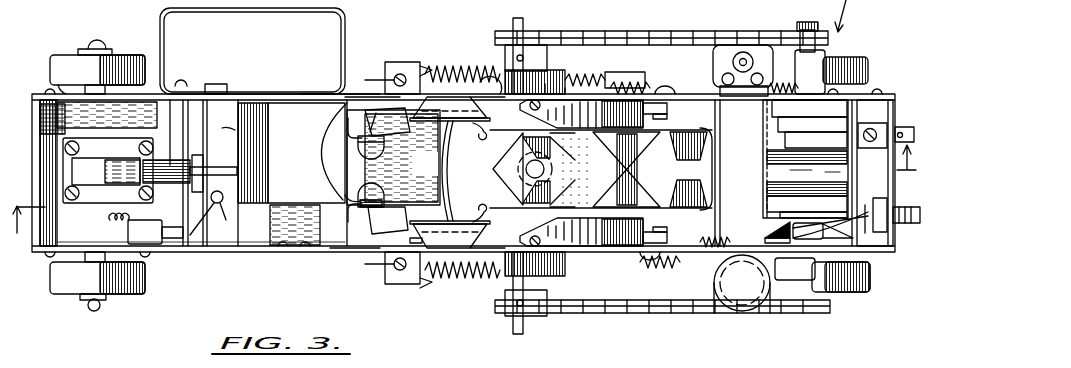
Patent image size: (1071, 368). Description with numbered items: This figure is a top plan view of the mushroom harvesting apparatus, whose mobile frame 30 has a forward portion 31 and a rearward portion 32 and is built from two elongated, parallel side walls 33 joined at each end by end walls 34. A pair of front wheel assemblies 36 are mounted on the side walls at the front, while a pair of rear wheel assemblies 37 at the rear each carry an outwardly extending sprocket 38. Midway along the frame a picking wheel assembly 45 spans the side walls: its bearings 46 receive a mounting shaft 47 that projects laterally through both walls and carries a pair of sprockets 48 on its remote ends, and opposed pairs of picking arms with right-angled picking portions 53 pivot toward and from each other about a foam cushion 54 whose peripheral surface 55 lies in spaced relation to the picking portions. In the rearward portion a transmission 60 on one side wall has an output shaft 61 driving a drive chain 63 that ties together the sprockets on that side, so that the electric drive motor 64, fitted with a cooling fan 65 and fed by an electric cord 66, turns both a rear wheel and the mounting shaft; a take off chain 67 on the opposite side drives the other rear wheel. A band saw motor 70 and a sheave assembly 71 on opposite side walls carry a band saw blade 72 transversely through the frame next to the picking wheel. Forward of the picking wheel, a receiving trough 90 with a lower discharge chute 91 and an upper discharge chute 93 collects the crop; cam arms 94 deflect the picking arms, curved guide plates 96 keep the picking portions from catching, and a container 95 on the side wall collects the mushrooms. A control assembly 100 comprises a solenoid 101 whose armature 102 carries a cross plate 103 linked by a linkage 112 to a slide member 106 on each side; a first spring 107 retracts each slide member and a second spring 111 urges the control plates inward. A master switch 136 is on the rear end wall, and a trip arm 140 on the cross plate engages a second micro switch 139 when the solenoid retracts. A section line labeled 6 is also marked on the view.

The section line 6 is at (458, 189).
The mobile frame 30 is at (345, 257).
The forward portion 31 is at (64, 90).
The rearward portion 32 is at (870, 268).
The side walls 33 is at (276, 98).
The end walls 34 is at (34, 175).
The front wheel assemblies 36 is at (115, 62).
The rear wheel assemblies 37 is at (862, 57).
The sprocket 38 is at (56, 191).
The picking wheel assembly 45 is at (690, 126).
The bearings 46 is at (515, 70).
The mounting shaft 47 is at (545, 66).
The sprockets 48 is at (520, 44).
The picking portion 53 is at (330, 140).
The foam cushion 54 is at (472, 168).
The peripheral surface 55 is at (652, 170).
The transmission 60 is at (864, 74).
The output shaft 61 is at (832, 97).
The drive chain 63 is at (628, 32).
The electric drive motor 64 is at (808, 185).
The cooling fan 65 is at (767, 230).
The electric cord 66 is at (908, 226).
The take off chain 67 is at (670, 314).
The band saw motor 70 is at (743, 311).
The sheave assembly 71 is at (772, 42).
The band saw blade 72 is at (722, 140).
The receiving trough 90 is at (308, 92).
The lower discharge chute 91 is at (306, 161).
The upper discharge chute 93 is at (404, 166).
The cam arms 94 is at (472, 197).
The container 95 is at (345, 42).
The guide plates 96 is at (377, 150).
The control assembly 100 is at (218, 80).
The solenoid 101 is at (97, 178).
The armature 102 is at (171, 164).
The cross plate 103 is at (224, 130).
The slide member 106 is at (391, 72).
The first spring 107 is at (720, 55).
The second spring 111 is at (447, 64).
The linkage 112 is at (357, 94).
The master switch 136 is at (904, 126).
The second micro switch 139 is at (148, 242).
The trip arm 140 is at (190, 238).